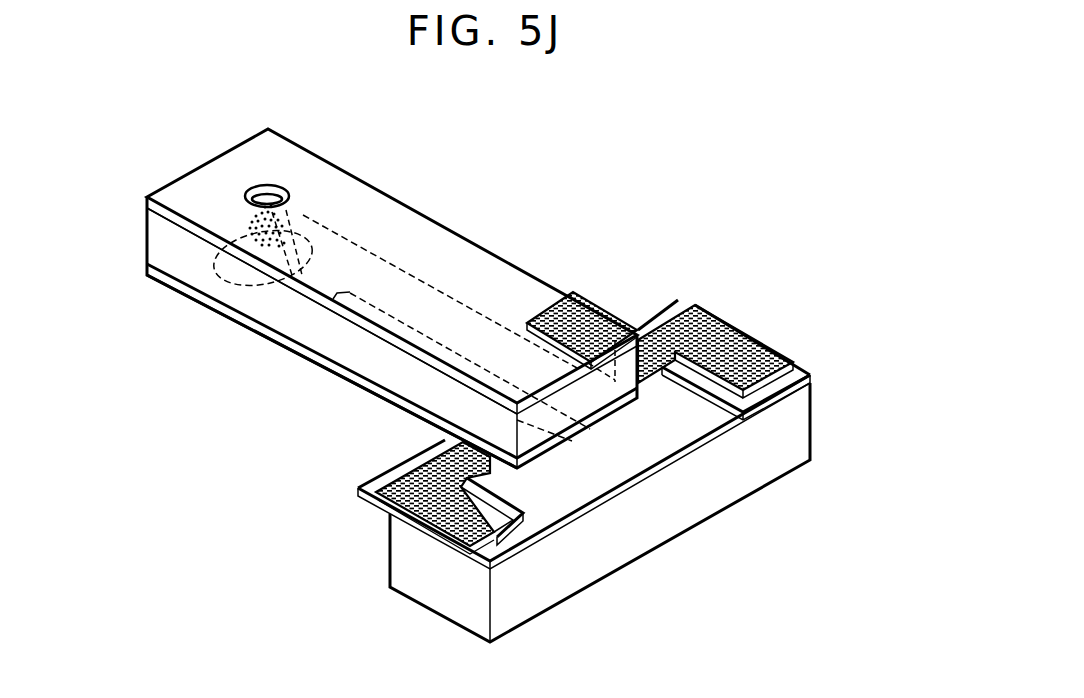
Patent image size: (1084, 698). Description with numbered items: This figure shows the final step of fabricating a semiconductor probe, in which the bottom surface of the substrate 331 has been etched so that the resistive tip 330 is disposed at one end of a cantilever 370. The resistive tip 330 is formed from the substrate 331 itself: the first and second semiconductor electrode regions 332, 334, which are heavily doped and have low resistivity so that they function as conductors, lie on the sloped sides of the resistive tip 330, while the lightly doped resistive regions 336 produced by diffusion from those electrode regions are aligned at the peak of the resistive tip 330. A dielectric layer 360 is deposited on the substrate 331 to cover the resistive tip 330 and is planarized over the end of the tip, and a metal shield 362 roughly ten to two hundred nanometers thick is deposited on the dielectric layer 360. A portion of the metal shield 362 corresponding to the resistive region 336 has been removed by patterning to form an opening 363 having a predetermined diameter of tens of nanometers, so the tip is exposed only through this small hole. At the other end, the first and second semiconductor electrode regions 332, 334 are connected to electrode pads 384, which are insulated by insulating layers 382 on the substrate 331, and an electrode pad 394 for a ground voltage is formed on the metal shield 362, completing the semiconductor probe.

The resistive tip 330 is at (297, 217).
The substrate 331 is at (789, 443).
The first semiconductor electrode region 332 is at (353, 263).
The second semiconductor electrode region 334 is at (183, 262).
The resistive region 336 is at (252, 190).
The dielectric layer 360 is at (247, 300).
The metal shield 362 is at (185, 184).
The opening 363 is at (273, 187).
The cantilever 370 is at (207, 302).
The insulating layer 382 is at (803, 378).
The electrode pad 384 is at (388, 510).
The electrode pad for a ground voltage 394 is at (578, 315).